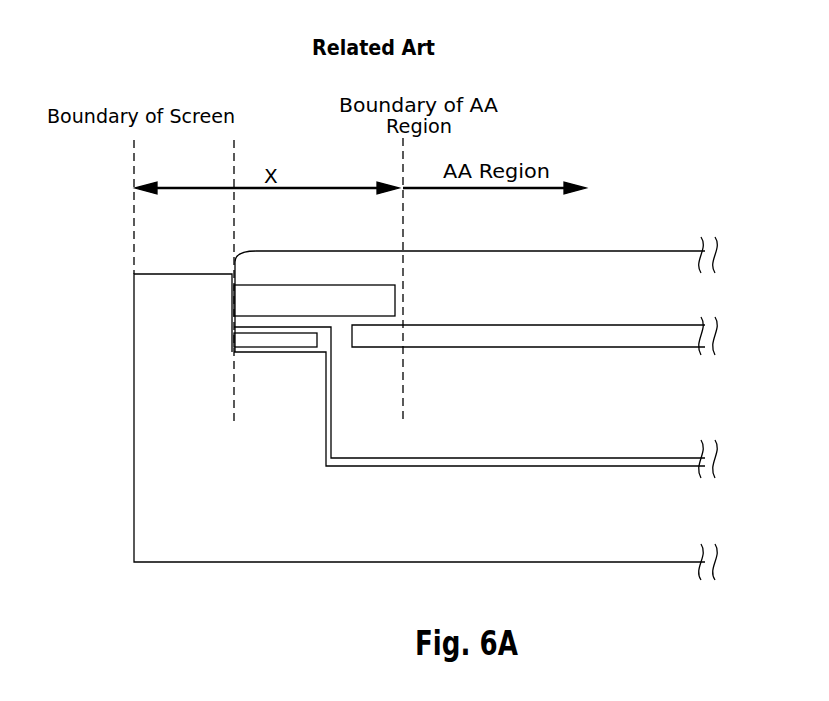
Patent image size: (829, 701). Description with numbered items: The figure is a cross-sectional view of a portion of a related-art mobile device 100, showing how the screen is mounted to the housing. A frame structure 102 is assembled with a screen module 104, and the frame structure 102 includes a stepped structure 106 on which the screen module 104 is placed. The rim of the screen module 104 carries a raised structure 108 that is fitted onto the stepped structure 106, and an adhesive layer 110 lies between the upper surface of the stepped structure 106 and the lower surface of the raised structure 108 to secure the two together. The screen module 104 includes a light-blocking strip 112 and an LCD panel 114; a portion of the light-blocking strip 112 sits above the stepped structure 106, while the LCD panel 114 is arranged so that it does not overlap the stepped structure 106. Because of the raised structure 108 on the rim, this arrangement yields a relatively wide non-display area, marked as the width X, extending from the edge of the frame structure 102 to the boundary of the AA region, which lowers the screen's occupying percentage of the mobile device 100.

The mobile device 100 is at (310, 128).
The frame structure 102 is at (175, 545).
The screen module 104 is at (627, 252).
The stepped structure 106 is at (257, 352).
The raised structure 108 is at (247, 328).
The adhesive layer 110 is at (257, 342).
The light-blocking strip 112 is at (337, 305).
The LCD panel 114 is at (378, 338).